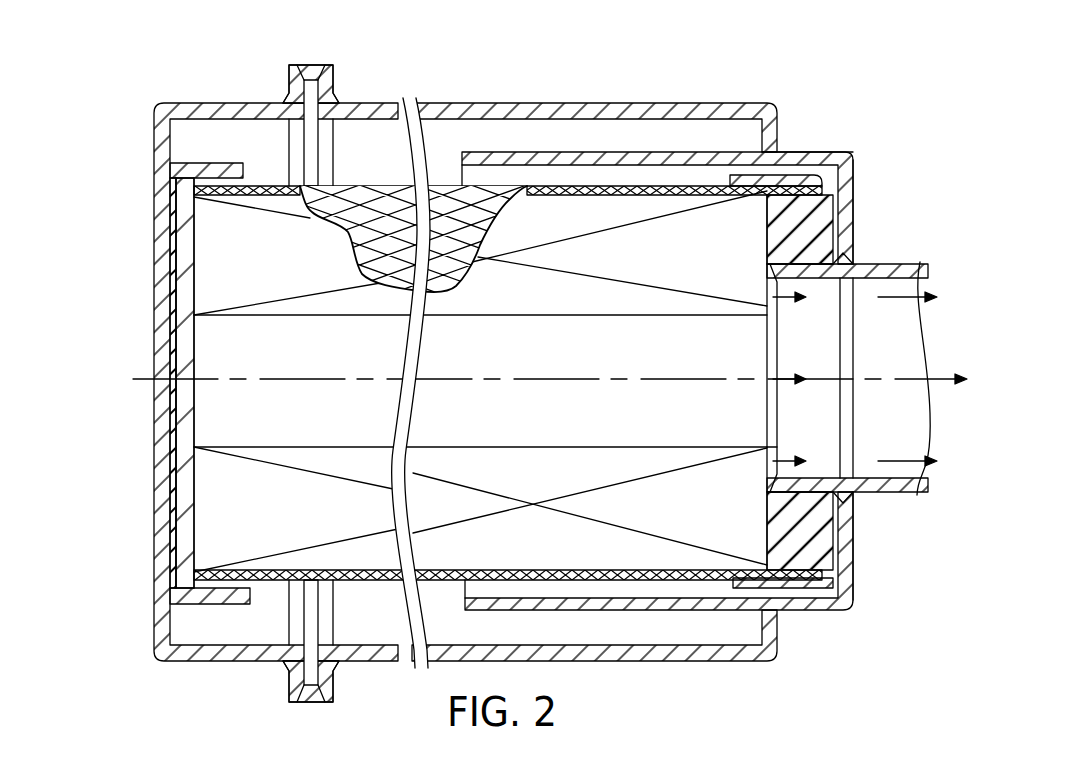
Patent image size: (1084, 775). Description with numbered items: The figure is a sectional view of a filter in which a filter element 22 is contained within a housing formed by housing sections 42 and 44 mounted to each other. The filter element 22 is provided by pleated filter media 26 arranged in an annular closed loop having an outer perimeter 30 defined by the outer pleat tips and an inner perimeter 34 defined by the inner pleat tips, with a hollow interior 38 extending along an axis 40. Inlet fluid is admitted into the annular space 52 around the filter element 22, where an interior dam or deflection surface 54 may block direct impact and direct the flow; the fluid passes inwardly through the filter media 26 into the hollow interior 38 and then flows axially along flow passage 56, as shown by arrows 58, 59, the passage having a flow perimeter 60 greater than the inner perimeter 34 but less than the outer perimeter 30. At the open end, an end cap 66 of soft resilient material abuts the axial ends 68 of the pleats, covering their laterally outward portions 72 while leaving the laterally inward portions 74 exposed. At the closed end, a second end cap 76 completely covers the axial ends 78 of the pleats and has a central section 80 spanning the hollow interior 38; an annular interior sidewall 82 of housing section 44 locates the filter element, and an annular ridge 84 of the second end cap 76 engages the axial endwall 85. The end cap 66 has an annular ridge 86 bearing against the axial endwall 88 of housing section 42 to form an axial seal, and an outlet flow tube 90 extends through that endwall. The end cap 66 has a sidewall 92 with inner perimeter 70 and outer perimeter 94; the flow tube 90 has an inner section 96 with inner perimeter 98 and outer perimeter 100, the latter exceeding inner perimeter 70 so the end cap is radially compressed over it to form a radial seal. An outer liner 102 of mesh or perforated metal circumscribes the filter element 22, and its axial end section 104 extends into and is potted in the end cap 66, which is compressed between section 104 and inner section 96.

The filter element 22 is at (433, 185).
The pleated filter media 26 is at (212, 270).
The outer perimeter 30 is at (227, 203).
The inner perimeter 34 is at (222, 308).
The hollow interior 38 is at (210, 420).
The axis 40 is at (357, 383).
The housing section 42 is at (455, 103).
The housing section 44 is at (212, 103).
The annular space 52 is at (600, 123).
The interior dam or deflection surface 54 is at (590, 610).
The flow passage 56 is at (790, 343).
The arrow 58 is at (913, 380).
The arrow 59 is at (934, 467).
The flow perimeter 60 is at (818, 278).
The end cap 66 is at (835, 213).
The axial ends of the pleats 68 is at (767, 213).
The inner perimeter 70 is at (800, 259).
The laterally outward portions 72 is at (768, 567).
The laterally inward portions 74 is at (767, 464).
The second end cap 76 is at (192, 477).
The axial ends of the pleats 78 is at (203, 498).
The central section 80 is at (190, 392).
The annular interior sidewall 82 is at (210, 163).
The annular ridge 84 is at (178, 518).
The axial endwall 85 is at (170, 554).
The annular ridge 86 is at (838, 264).
The axial endwall 88 is at (853, 233).
The outlet flow tube 90 is at (924, 276).
The sidewall 92 is at (828, 547).
The outer perimeter 94 is at (817, 582).
The inner section 96 is at (767, 273).
The inner perimeter 98 is at (811, 466).
The outer perimeter 100 is at (772, 495).
The outer liner 102 is at (517, 569).
The axial end section 104 is at (835, 581).